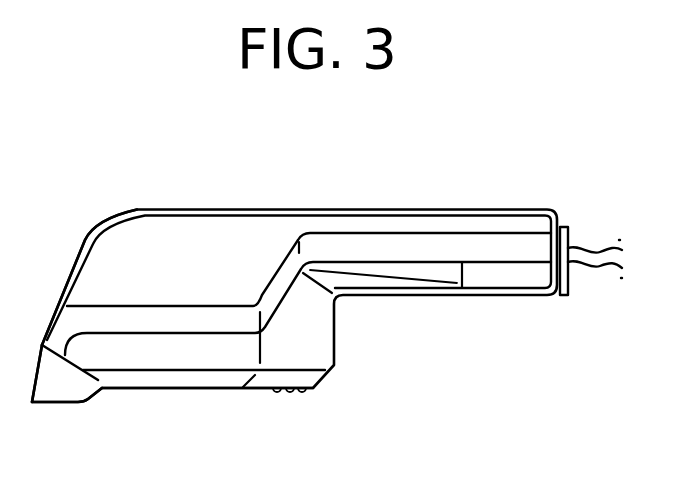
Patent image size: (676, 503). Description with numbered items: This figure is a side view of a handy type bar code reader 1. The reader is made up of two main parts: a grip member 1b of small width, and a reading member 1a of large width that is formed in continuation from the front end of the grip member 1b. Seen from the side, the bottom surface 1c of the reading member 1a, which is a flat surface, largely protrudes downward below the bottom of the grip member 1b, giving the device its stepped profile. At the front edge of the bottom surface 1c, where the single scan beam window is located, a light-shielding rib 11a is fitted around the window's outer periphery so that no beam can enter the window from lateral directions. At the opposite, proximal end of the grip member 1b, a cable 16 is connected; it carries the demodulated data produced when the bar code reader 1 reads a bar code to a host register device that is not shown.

The bar code reader 1 is at (255, 209).
The reading member 1a is at (137, 210).
The grip member 1b is at (450, 210).
The bottom surface 1c is at (220, 388).
The light-shielding rib 11a is at (90, 390).
The cable 16 is at (587, 247).